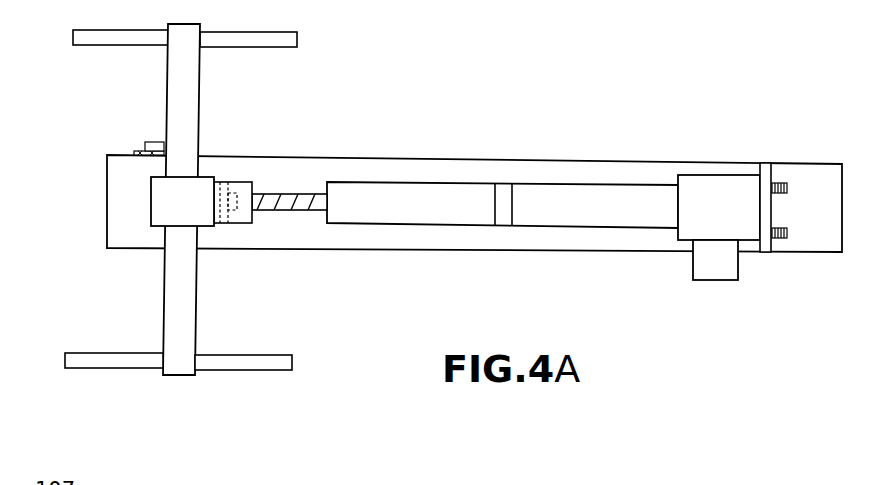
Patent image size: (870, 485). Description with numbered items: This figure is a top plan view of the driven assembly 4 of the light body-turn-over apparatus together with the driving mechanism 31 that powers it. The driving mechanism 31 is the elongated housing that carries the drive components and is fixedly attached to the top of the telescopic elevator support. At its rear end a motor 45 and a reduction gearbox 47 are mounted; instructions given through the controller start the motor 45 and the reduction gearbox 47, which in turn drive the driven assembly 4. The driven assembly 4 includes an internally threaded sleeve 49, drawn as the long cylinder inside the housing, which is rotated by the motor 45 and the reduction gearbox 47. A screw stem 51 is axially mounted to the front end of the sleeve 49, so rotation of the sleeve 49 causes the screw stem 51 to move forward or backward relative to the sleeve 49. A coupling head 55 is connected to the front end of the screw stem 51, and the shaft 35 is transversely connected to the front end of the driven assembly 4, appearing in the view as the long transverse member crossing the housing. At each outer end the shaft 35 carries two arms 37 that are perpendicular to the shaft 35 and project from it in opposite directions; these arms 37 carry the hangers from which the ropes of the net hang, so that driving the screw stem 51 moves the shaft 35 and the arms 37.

The driven assembly 4 is at (484, 157).
The driving mechanism 31 is at (611, 148).
The shaft 35 is at (173, 57).
The arm 37 is at (272, 362).
The motor 45 is at (715, 265).
The reduction gearbox 47 is at (712, 197).
The internally threaded sleeve 49 is at (378, 192).
The screw stem 51 is at (290, 195).
The coupling head 55 is at (243, 212).